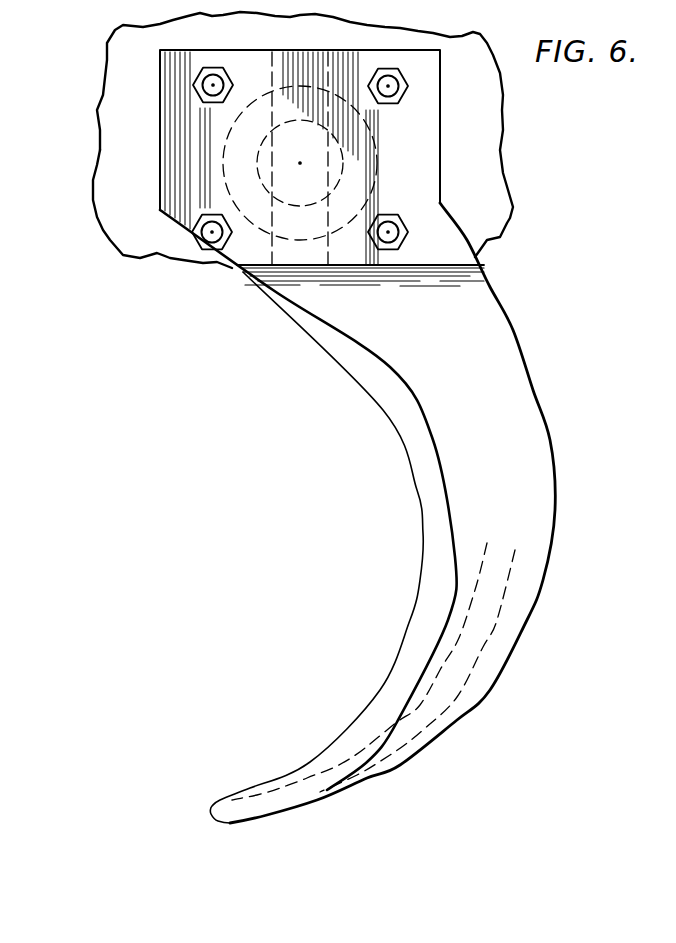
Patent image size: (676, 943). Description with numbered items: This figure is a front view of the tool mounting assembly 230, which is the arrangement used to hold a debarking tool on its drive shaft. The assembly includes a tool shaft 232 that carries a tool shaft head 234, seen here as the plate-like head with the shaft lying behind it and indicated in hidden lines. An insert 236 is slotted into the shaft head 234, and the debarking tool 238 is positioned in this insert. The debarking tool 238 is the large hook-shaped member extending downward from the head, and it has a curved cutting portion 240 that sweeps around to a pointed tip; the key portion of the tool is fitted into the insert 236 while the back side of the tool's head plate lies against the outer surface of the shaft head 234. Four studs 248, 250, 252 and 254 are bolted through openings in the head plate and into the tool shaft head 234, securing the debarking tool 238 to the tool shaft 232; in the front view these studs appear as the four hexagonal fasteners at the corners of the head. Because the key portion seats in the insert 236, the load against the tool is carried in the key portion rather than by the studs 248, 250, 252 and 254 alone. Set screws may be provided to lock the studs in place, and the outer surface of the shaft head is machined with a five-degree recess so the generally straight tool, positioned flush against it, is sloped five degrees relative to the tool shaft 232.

The tool mounting assembly 230 is at (339, 417).
The tool shaft 232 is at (345, 162).
The tool shaft head 234 is at (170, 178).
The insert 236 is at (282, 270).
The debarking tool 238 is at (505, 333).
The curved cutting portion 240 is at (417, 503).
The stud 248 is at (222, 67).
The stud 250 is at (212, 250).
The stud 252 is at (403, 86).
The stud 254 is at (391, 243).